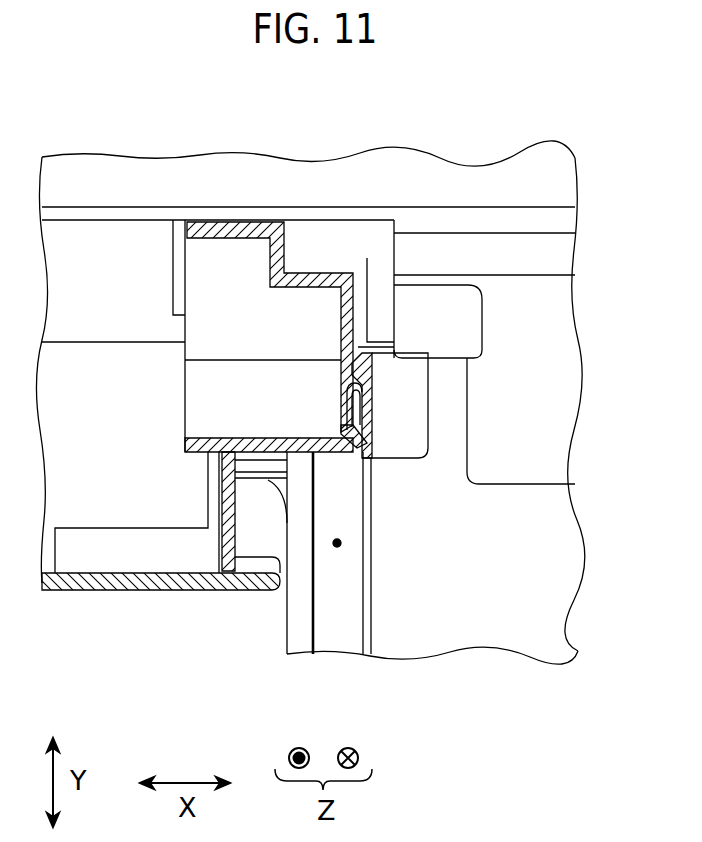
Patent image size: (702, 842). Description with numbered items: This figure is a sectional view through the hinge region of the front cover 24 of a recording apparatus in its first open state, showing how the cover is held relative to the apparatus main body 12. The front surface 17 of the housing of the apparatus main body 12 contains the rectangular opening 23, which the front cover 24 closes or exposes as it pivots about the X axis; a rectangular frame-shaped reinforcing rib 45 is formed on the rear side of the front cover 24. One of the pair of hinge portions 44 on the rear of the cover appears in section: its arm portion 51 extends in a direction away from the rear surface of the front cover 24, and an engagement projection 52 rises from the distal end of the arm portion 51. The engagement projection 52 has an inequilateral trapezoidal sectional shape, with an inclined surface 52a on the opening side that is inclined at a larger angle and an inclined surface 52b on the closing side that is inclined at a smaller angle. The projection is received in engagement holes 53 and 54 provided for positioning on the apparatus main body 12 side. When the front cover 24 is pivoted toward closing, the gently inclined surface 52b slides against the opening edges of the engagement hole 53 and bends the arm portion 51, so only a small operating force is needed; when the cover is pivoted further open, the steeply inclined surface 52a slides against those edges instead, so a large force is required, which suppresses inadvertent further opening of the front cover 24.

The apparatus main body 12 is at (193, 172).
The front surface 17 is at (128, 593).
The opening 23 is at (337, 543).
The front cover 24 is at (430, 632).
The hinge portions 44 is at (399, 458).
The reinforcing rib 45 is at (372, 588).
The arm portion 51 is at (378, 381).
The engagement projection 52 is at (348, 400).
The inclined surface on the opening side 52a is at (352, 458).
The inclined surface on the closing side 52b is at (350, 388).
The engagement hole 53 is at (343, 385).
The engagement hole 54 is at (341, 312).